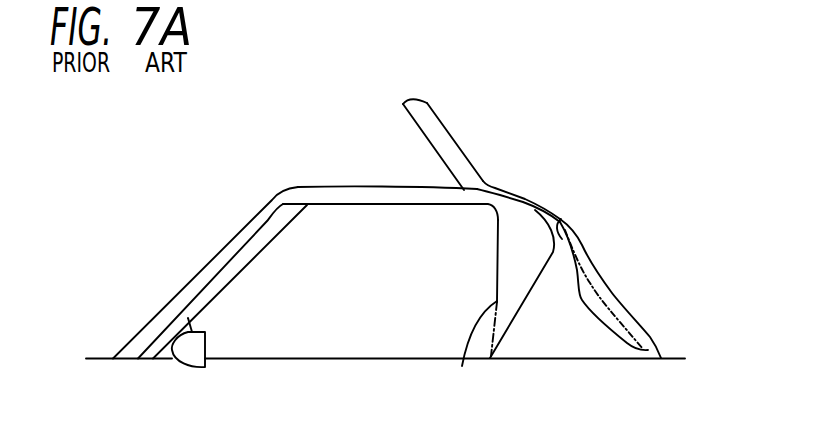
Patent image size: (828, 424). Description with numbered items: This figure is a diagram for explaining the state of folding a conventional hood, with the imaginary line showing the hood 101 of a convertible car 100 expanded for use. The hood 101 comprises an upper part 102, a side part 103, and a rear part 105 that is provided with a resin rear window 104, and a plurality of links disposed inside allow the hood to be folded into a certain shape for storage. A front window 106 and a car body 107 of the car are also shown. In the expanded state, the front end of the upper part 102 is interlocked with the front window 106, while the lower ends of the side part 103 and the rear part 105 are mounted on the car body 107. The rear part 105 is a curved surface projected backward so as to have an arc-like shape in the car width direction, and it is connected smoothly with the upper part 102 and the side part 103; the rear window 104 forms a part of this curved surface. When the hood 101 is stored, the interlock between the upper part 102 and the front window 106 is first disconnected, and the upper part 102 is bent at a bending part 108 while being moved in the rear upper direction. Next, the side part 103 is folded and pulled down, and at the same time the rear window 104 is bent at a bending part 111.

The convertible car 100 is at (165, 232).
The hood 101 is at (350, 185).
The upper part 102 is at (378, 187).
The side part 103 is at (462, 366).
The rear window 104 is at (620, 288).
The rear part 105 is at (581, 232).
The front window 106 is at (234, 236).
The car body 107 is at (100, 357).
The bending part 108 is at (482, 181).
The bending part 111 is at (593, 288).